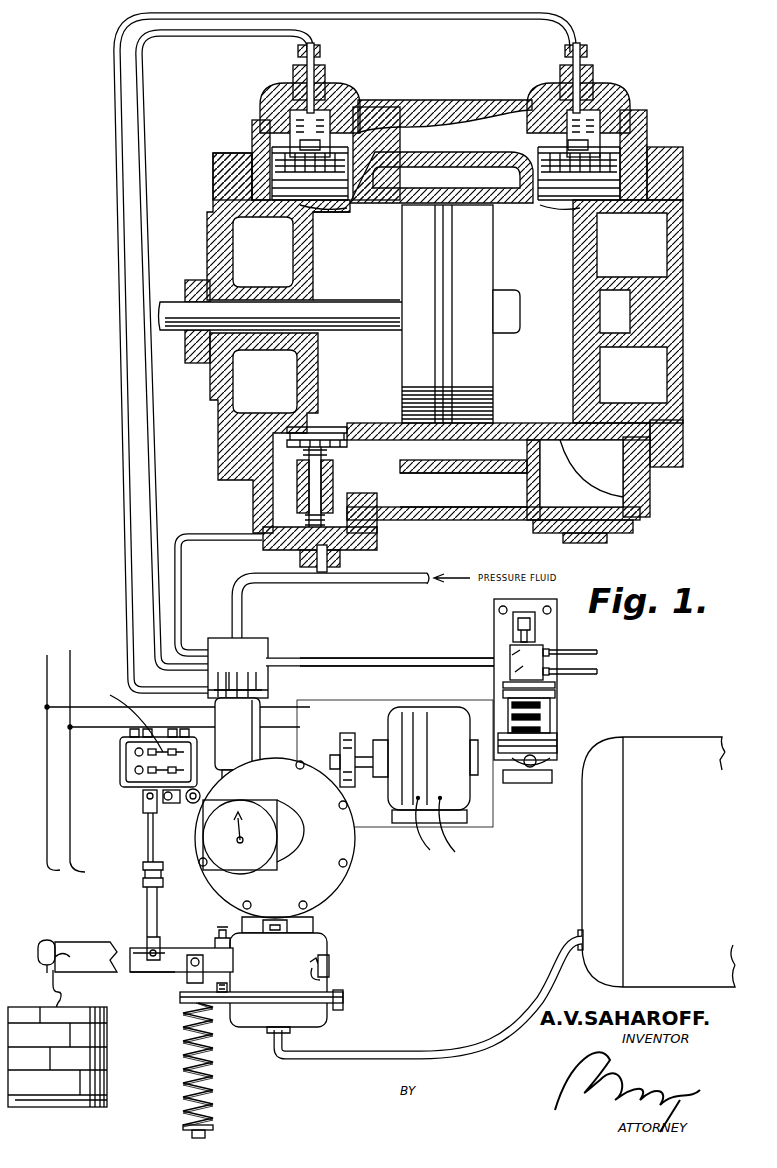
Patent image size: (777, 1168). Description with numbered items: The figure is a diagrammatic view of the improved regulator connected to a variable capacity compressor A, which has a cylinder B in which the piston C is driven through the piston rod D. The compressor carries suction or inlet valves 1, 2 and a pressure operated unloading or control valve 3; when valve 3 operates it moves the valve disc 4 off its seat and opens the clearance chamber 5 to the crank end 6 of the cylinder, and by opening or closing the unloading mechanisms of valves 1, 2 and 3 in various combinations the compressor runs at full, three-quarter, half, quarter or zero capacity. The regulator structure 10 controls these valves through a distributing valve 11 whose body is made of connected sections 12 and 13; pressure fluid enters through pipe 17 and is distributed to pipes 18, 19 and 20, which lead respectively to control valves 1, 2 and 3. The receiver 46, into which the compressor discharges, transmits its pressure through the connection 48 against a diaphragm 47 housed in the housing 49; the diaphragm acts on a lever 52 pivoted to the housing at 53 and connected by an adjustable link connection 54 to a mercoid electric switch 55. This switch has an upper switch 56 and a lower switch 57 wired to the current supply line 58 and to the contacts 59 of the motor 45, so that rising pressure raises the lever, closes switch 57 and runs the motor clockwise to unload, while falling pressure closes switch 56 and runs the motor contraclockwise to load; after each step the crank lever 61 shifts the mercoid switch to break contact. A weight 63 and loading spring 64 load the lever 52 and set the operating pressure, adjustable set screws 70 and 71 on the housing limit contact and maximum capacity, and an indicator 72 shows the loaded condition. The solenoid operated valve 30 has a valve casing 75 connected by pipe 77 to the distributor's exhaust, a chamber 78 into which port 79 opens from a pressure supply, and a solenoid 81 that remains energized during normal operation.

The suction or inlet valve 1 is at (280, 172).
The suction or inlet valve 2 is at (628, 132).
The pressure operated unloading or control valve 3 is at (290, 492).
The valve disc 4 is at (328, 427).
The clearance chamber 5 is at (450, 493).
The crank end of the cylinder 6 is at (326, 250).
The regulator structure 10 is at (338, 888).
The distributing valve 11 is at (268, 645).
The casing section 12 is at (270, 660).
The casing section 13 is at (270, 688).
The pipe 17 is at (238, 602).
The pipe 18 is at (437, 20).
The pipe 19 is at (208, 36).
The pipe 20 is at (182, 567).
The solenoid operated valve 30 is at (540, 648).
The motor 45 is at (462, 790).
The receiver 46 is at (623, 863).
The diaphragm 47 is at (343, 1000).
The connection 48 is at (435, 1050).
The housing 49 is at (312, 946).
The lever 52 is at (147, 975).
The pivot 53 is at (320, 978).
The adjustable link connection 54 is at (146, 900).
The mercoid electric switch 55 is at (114, 772).
The upper switch 56 is at (129, 715).
The lower switch 57 is at (150, 787).
The current supply line 58 is at (177, 761).
The contacts of the motor 59 is at (446, 832).
The crank lever 61 is at (198, 802).
The weight 63 is at (108, 1068).
The loading spring 64 is at (215, 1068).
The adjustable set screw 70 is at (214, 930).
The adjustable set screw 71 is at (225, 1003).
The indicator 72 is at (215, 850).
The valve casing 75 is at (545, 683).
The pipe 77 is at (392, 659).
The chamber 78 is at (600, 672).
The port 79 is at (600, 652).
The solenoid 81 is at (553, 716).
The variable capacity compressor A is at (248, 397).
The cylinder B is at (647, 487).
The piston C is at (480, 358).
The piston rod D is at (166, 335).